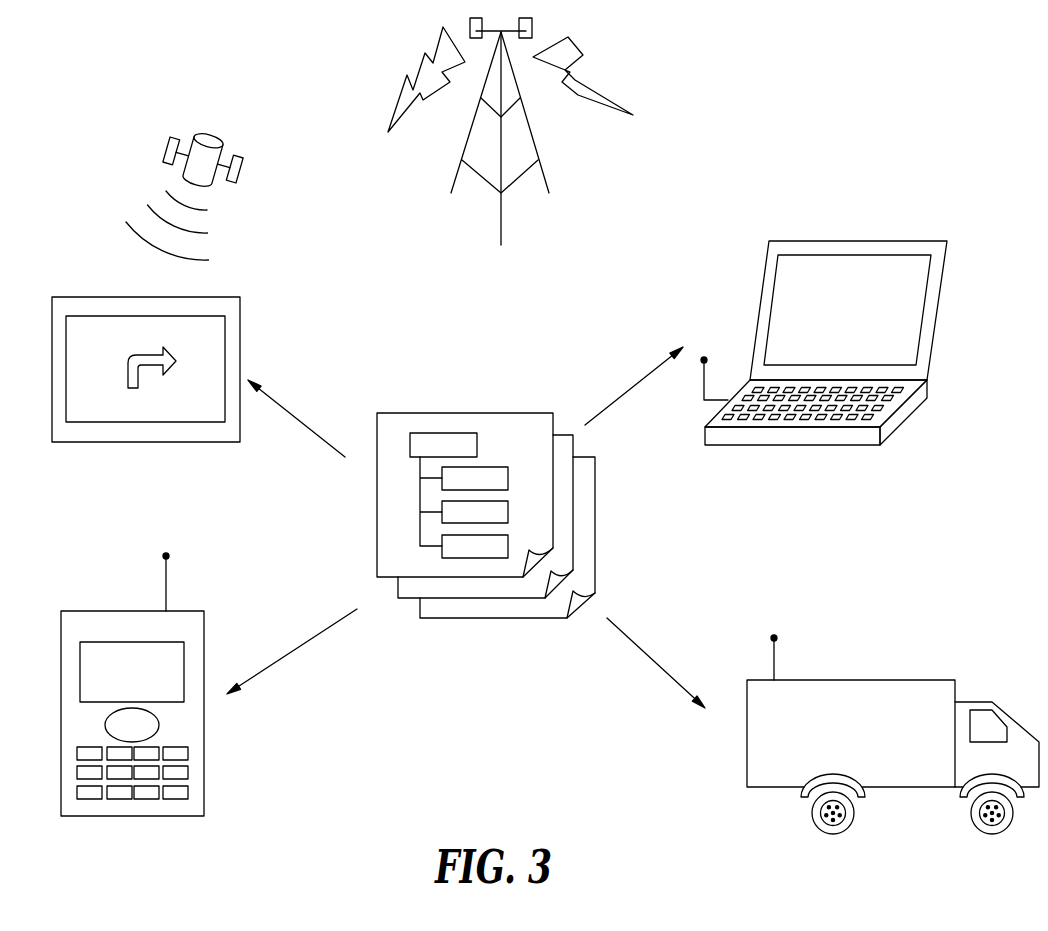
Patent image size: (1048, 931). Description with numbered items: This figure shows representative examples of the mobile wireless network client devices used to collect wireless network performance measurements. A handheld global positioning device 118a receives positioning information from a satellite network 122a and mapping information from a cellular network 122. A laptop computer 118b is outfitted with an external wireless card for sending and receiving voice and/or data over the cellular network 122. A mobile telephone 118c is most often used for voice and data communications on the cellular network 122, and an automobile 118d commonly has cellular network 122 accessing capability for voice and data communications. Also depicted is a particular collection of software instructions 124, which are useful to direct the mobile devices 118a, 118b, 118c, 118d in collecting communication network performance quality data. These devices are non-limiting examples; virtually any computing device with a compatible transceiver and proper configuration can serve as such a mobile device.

The handheld global positioning device 118a is at (144, 442).
The laptop computer 118b is at (790, 445).
The mobile telephone 118c is at (130, 816).
The automobile 118d is at (853, 680).
The cellular network 122 is at (520, 180).
The satellite network 122a is at (210, 140).
The software instructions 124 is at (573, 522).